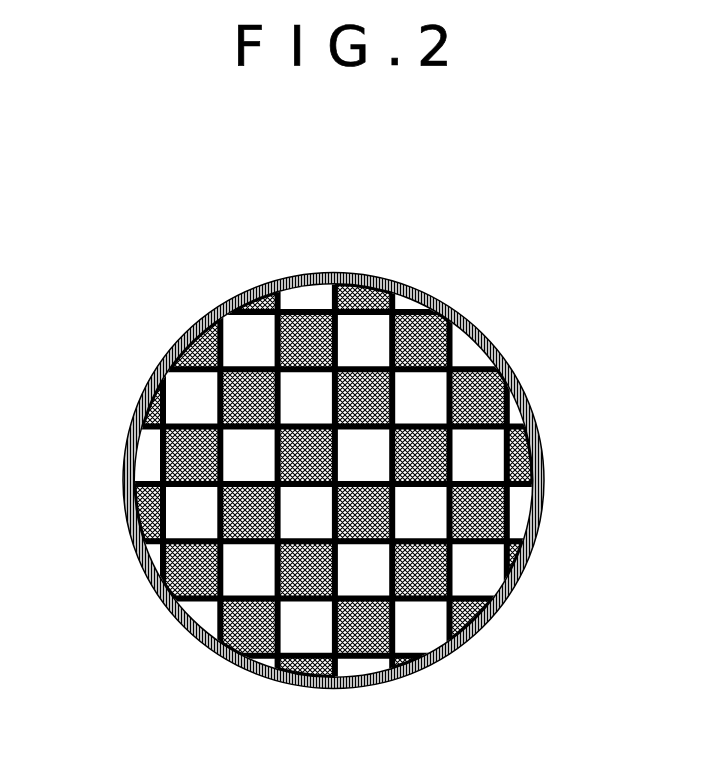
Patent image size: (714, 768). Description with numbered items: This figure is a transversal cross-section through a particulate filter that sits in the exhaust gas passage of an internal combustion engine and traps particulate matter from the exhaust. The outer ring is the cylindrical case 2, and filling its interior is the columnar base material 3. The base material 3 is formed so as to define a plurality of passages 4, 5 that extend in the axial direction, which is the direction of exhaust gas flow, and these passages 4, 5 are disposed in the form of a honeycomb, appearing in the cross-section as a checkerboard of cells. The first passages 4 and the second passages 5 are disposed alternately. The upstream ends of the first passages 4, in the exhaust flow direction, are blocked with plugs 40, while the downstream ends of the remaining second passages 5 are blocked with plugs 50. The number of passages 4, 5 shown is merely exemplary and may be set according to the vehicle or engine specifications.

The base material 3 is at (153, 329).
The case 2 is at (420, 289).
The plugs 40 is at (335, 484).
The plugs 50 is at (510, 382).
The first passages 4 is at (335, 484).
The second passages 5 is at (335, 484).